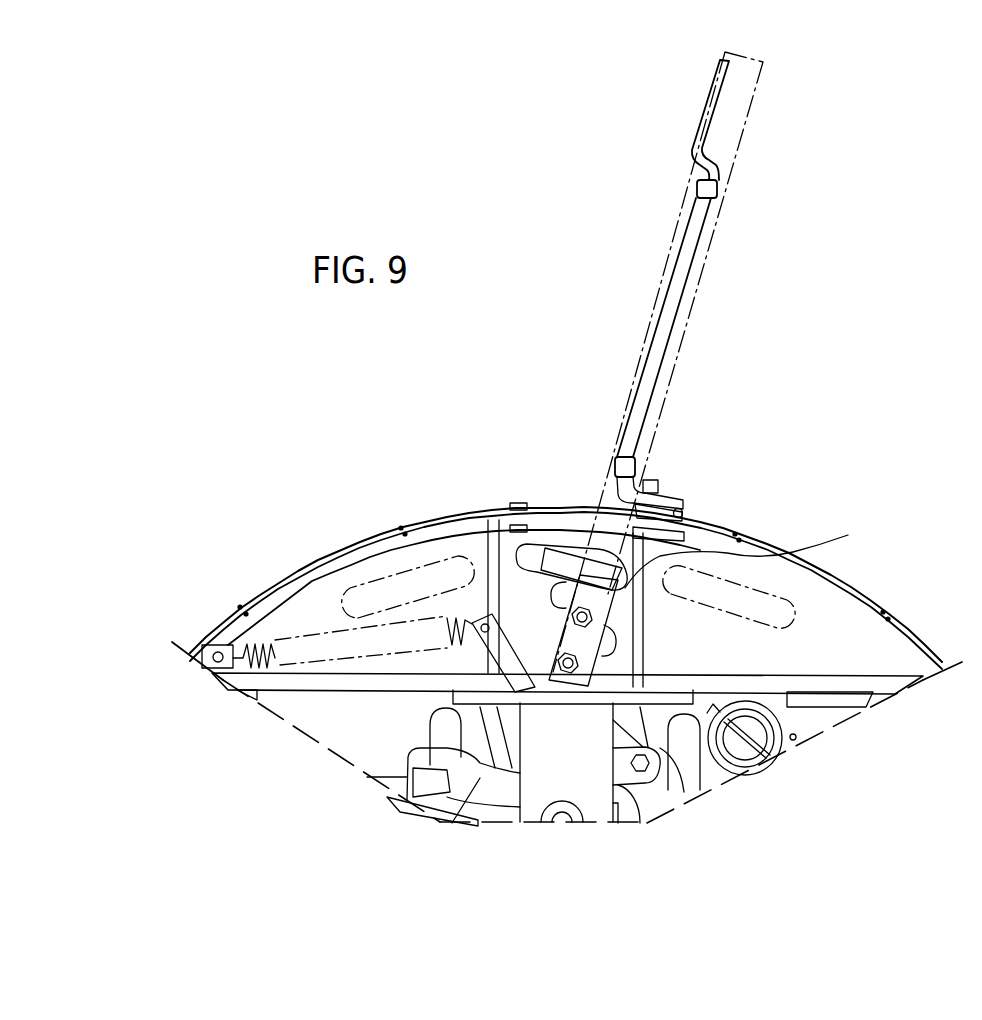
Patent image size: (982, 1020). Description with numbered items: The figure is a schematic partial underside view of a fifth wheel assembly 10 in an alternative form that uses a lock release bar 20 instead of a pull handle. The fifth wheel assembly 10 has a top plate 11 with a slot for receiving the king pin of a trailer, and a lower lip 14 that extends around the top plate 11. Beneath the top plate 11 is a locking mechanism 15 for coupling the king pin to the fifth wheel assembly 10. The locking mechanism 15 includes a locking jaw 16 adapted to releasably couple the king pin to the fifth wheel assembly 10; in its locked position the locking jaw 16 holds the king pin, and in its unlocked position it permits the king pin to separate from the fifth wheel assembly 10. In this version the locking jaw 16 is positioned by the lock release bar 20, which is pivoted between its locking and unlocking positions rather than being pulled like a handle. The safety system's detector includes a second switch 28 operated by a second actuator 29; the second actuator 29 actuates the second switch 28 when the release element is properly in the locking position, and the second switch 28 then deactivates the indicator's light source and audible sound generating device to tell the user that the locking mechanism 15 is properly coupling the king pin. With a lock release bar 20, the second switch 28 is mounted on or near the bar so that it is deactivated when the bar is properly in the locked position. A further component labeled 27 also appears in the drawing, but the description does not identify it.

The fifth wheel assembly 10 is at (337, 499).
The top plate 11 is at (468, 530).
The lower lip 14 is at (440, 518).
The locking mechanism 15 is at (441, 690).
The locking jaw 16 is at (470, 805).
The lock release bar 20 is at (678, 339).
The cable 27 is at (295, 595).
The second switch 28 is at (590, 537).
The second actuator 29 is at (583, 530).